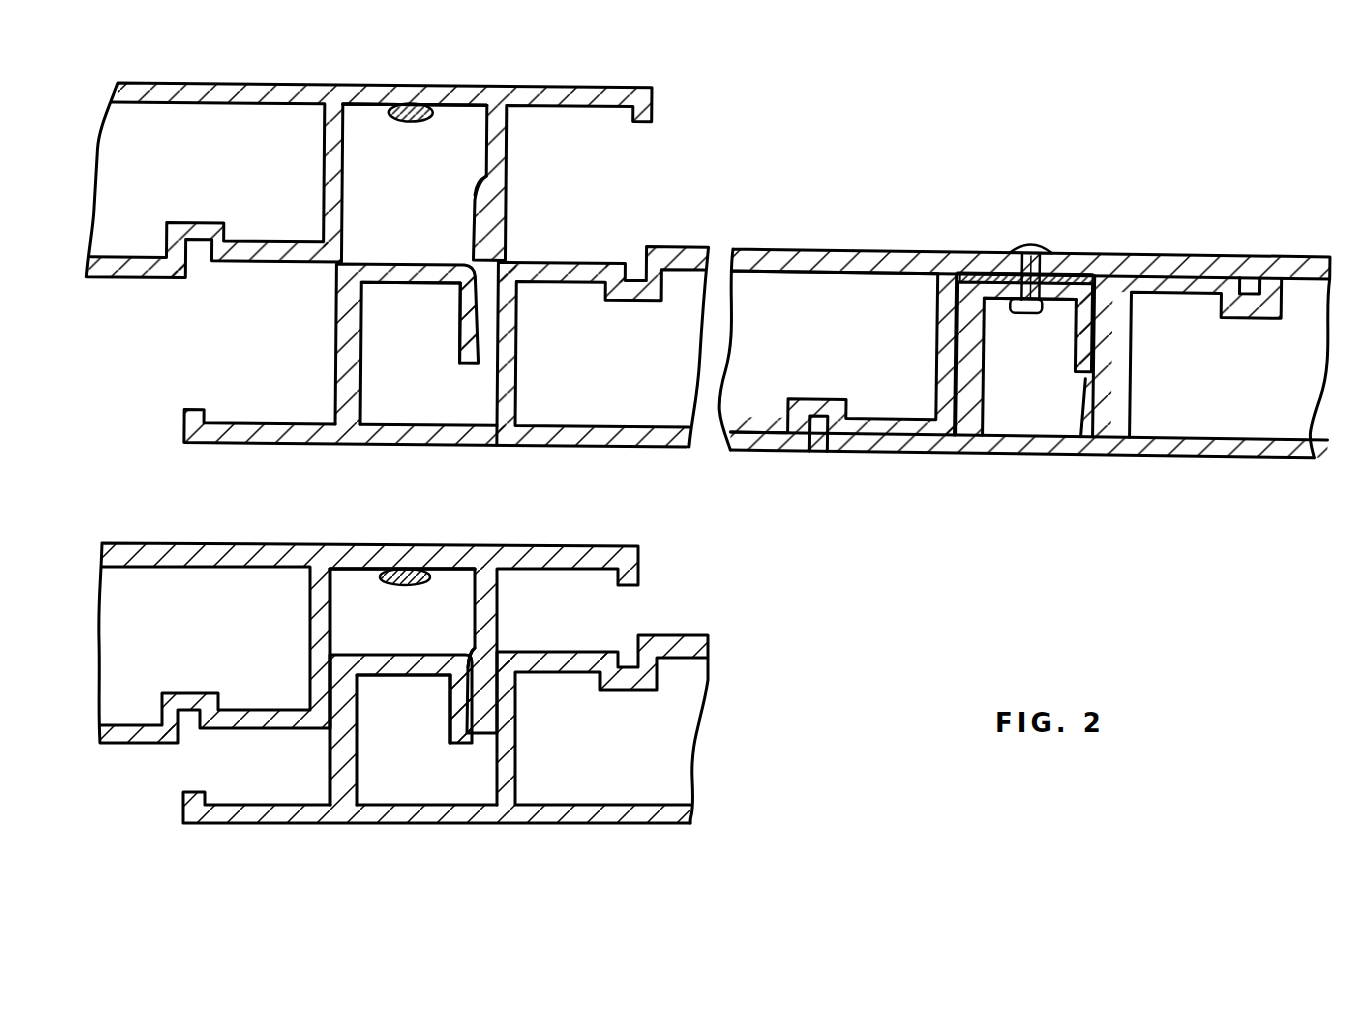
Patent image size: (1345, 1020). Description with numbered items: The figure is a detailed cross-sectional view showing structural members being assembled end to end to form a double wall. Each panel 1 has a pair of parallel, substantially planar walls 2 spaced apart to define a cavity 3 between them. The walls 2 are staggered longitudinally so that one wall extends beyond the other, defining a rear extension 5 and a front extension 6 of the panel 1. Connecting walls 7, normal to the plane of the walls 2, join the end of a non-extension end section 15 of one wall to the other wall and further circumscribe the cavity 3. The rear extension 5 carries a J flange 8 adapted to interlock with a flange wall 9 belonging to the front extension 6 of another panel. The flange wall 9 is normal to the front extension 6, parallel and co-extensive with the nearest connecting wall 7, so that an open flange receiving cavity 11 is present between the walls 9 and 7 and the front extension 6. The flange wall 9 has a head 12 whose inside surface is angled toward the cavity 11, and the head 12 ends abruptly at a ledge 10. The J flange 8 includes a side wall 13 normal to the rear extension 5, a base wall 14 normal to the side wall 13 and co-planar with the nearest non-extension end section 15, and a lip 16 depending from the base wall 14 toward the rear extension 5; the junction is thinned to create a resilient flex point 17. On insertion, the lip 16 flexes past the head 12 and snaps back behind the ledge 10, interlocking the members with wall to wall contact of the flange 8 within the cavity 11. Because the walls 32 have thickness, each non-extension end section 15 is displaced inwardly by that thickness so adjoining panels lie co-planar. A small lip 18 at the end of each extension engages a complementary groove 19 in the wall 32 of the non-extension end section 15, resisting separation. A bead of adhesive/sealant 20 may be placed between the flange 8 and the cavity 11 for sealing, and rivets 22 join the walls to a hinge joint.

The panel 1 is at (604, 83).
The wall 2 is at (150, 83).
The cavity 3 is at (136, 176).
The rear extension 5 is at (372, 445).
The front extension 6 is at (383, 90).
The connecting wall 7 is at (325, 152).
The J flange 8 is at (333, 306).
The flange wall 9 is at (510, 130).
The ledge 10 is at (479, 185).
The flange receiving cavity 11 is at (446, 166).
The head 12 is at (478, 228).
The side wall 13 is at (350, 365).
The base wall 14 is at (402, 285).
The non-extension end section 15 is at (582, 263).
The lip 16 is at (468, 345).
The resilient flex point 17 is at (455, 285).
The small lip 18 is at (655, 105).
The groove 19 is at (636, 258).
The bead of adhesive/sealant 20 is at (396, 118).
The rivet 22 is at (1036, 249).
The wall 32 is at (335, 140).